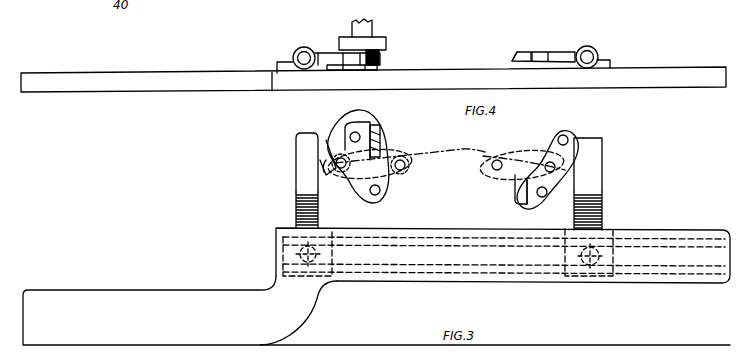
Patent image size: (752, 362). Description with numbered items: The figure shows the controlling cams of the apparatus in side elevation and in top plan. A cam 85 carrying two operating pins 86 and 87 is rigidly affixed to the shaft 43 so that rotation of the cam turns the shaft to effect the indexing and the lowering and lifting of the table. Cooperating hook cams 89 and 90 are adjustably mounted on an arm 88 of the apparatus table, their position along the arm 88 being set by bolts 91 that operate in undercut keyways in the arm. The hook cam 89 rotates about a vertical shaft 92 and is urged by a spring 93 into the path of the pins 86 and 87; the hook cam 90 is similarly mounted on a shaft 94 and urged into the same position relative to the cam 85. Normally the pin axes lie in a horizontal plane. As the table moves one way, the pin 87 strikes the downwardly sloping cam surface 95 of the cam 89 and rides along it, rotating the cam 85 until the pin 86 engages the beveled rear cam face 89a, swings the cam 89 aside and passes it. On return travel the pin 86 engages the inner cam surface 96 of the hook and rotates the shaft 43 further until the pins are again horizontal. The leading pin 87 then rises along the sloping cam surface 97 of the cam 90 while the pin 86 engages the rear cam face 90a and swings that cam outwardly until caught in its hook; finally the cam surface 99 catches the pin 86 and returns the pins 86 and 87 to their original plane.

In FIG. 4, the shaft 43 is at (374, 28).
In FIG. 4, the cam 85 is at (388, 43).
In FIG. 3, the cam 85 is at (462, 149).
In FIG. 4, the operating pin 86 is at (357, 69).
In FIG. 3, the operating pin 86 is at (362, 135).
In FIG. 4, the operating pin 87 is at (372, 69).
In FIG. 3, the operating pin 87 is at (338, 172).
In FIG. 4, the arm 88 is at (61, 72).
In FIG. 3, the arm 88 is at (164, 289).
In FIG. 4, the hook cam 89 is at (319, 52).
In FIG. 3, the hook cam 89 is at (337, 116).
In FIG. 4, the beveled rear cam face 89a is at (381, 58).
In FIG. 3, the beveled rear cam face 89a is at (385, 130).
In FIG. 4, the hook cam 90 is at (583, 47).
In FIG. 3, the hook cam 90 is at (574, 128).
In FIG. 4, the rear cam face 90a is at (512, 56).
In FIG. 3, the rear cam face 90a is at (514, 202).
In FIG. 3, the bolt 91 is at (276, 252).
In FIG. 4, the vertical shaft 92 is at (295, 51).
In FIG. 3, the vertical shaft 92 is at (308, 133).
In FIG. 3, the spring 93 is at (296, 206).
In FIG. 3, the shaft 94 is at (601, 175).
In FIG. 3, the cam surface 95 is at (333, 162).
In FIG. 3, the inner cam surface 96 is at (375, 150).
In FIG. 4, the sloping cam surface 97 is at (569, 51).
In FIG. 3, the sloping cam surface 97 is at (575, 160).
In FIG. 4, the cam surface 99 is at (532, 51).
In FIG. 3, the cam surface 99 is at (514, 186).